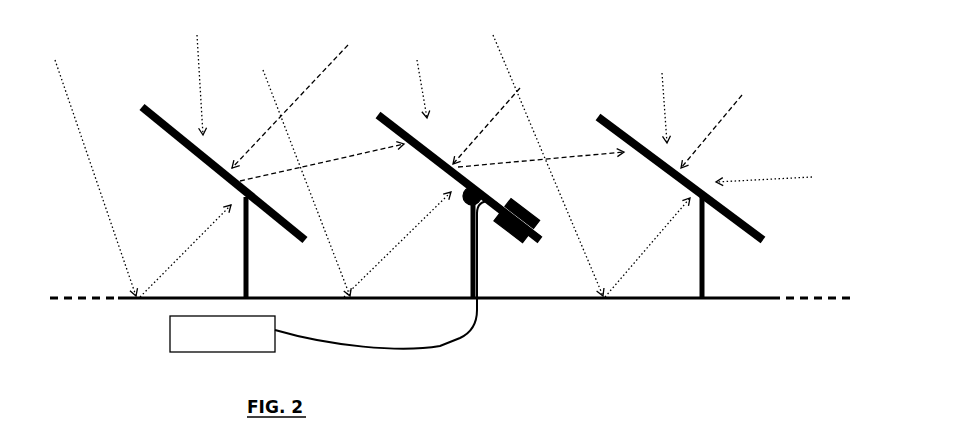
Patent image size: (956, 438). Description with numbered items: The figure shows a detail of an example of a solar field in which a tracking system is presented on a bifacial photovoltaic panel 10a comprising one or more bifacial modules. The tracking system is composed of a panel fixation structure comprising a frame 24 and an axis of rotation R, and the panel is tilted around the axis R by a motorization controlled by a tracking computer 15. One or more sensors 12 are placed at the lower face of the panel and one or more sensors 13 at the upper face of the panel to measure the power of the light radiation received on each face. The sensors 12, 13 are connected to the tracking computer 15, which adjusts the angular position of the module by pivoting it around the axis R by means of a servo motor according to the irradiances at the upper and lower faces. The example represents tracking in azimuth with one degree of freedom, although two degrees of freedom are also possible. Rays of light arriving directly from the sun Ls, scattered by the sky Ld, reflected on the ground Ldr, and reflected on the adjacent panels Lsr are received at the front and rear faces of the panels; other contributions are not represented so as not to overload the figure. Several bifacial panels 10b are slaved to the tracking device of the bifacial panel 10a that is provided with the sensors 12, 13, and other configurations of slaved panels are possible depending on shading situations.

The bifacial photovoltaic panel 10a is at (410, 150).
The bifacial panels 10b is at (176, 132).
The sensors 12 is at (496, 232).
The sensors 13 is at (530, 206).
The tracking computer 15 is at (170, 332).
The frame 24 is at (475, 262).
The axis of rotation R is at (464, 201).
The rays of light scattered by the sky Ld is at (62, 80).
The rays of light reflected on the ground Ldr is at (191, 242).
The rays of light arriving directly from the sun Ls is at (345, 46).
The rays of light reflected on the adjacent panels Lsr is at (583, 160).